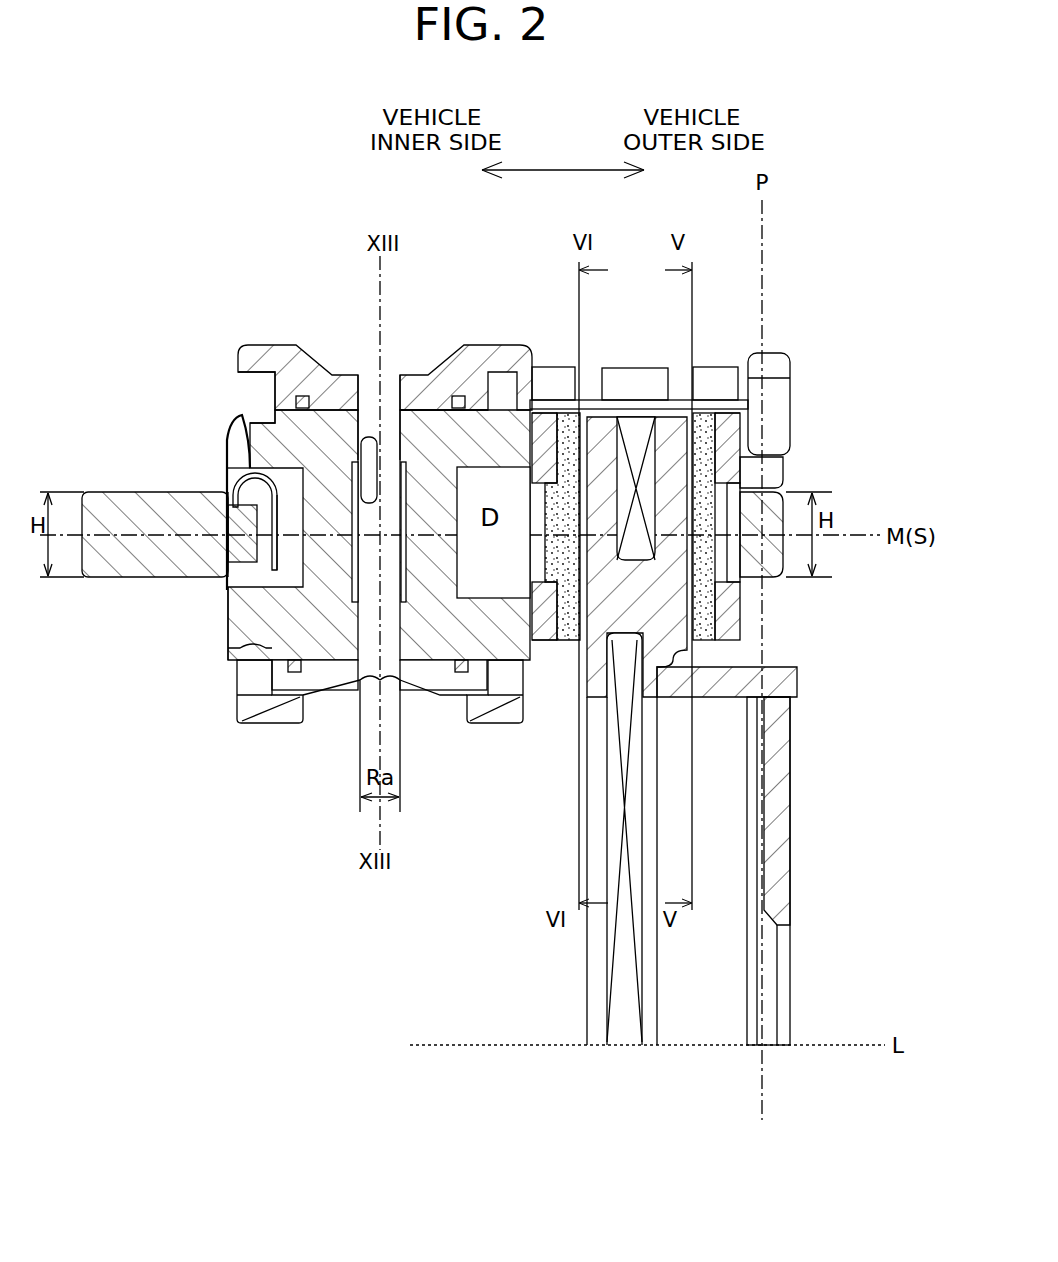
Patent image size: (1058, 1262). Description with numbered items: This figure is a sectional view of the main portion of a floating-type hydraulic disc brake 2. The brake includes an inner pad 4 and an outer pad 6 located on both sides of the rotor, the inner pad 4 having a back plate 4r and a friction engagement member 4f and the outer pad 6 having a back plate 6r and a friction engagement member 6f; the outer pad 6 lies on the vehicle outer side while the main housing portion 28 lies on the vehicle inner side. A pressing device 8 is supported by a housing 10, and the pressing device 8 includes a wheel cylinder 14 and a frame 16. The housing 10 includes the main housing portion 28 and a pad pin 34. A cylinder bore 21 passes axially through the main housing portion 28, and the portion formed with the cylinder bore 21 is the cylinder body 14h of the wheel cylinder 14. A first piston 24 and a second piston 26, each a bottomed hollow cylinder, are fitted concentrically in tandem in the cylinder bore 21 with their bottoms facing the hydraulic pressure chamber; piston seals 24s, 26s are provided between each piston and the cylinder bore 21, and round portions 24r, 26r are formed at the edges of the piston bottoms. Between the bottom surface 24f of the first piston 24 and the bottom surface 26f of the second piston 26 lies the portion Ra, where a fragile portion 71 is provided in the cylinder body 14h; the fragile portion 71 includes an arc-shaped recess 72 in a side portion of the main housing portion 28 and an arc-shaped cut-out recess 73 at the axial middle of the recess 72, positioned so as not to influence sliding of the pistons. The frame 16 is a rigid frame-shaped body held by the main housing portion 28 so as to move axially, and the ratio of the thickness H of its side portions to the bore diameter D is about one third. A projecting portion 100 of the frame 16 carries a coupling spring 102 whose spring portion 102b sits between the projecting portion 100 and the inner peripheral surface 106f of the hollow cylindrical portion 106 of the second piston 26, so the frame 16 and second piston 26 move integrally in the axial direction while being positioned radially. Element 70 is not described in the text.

The disc brake 2 is at (210, 325).
The inner pad 4 is at (560, 398).
The back plate 4r is at (548, 410).
The friction engagement member 4f is at (568, 625).
The outer pad 6 is at (708, 398).
The back plate 6r is at (728, 420).
The friction engagement member 6f is at (708, 632).
The pressing device 8 is at (150, 440).
The housing 10 is at (278, 330).
The wheel cylinder 14 is at (216, 658).
The cylinder body 14h is at (412, 366).
The frame 16 is at (108, 505).
The cylinder bore 21 is at (445, 662).
The first piston 24 is at (442, 664).
The round portion 24r is at (432, 373).
The bottom surface 24f is at (402, 362).
The piston seal 24s is at (472, 676).
The second piston 26 is at (292, 662).
The round portion 26r is at (356, 368).
The bottom surface 26f is at (366, 395).
The piston seal 26s is at (298, 674).
The main housing portion 28 is at (252, 712).
The pad pin 34 is at (760, 426).
The bolt 70 is at (640, 388).
The fragile portion 71 is at (348, 684).
The recess 72 is at (392, 678).
The cut-out recess 73 is at (372, 690).
The projecting portion 100 is at (236, 578).
The coupling spring 102 is at (228, 466).
The spring portion 102b is at (246, 440).
The hollow cylindrical portion 106 is at (252, 585).
The inner peripheral surface 106f is at (266, 607).